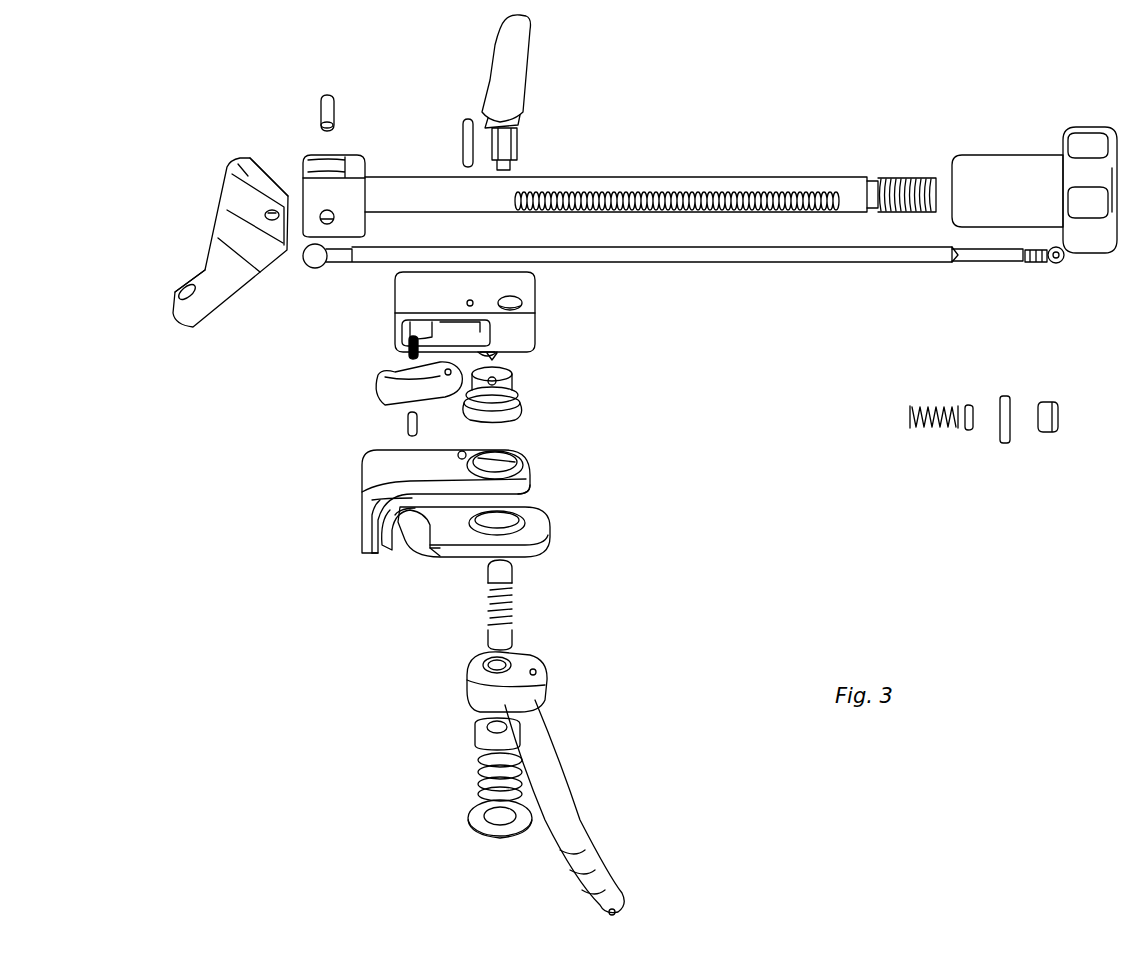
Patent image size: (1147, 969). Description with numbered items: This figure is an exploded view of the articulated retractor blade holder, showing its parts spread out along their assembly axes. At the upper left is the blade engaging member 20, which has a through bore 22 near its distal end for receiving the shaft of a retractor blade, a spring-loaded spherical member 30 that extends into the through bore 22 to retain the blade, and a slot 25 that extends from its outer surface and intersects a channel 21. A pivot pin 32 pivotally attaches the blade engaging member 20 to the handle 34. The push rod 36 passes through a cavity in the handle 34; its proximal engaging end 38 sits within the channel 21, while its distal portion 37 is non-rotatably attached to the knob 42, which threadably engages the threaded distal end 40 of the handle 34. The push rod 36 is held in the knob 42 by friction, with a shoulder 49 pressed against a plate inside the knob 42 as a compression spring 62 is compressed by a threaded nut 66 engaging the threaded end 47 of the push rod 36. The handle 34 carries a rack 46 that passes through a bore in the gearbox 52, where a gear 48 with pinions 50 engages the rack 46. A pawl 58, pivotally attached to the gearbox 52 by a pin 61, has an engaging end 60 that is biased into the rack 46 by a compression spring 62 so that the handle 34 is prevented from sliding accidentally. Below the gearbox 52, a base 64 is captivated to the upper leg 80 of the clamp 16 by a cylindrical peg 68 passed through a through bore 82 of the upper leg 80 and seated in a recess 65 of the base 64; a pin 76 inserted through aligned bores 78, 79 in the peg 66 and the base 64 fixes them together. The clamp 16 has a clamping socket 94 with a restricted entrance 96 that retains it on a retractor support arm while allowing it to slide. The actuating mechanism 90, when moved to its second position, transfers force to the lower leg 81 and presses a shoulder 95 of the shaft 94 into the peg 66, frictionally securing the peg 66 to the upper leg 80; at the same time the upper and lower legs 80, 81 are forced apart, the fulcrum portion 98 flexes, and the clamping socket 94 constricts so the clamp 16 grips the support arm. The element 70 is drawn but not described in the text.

The clamp 16 is at (308, 473).
The blade engaging member 20 is at (236, 322).
The channel 21 is at (255, 165).
The through bore 22 is at (183, 292).
The slot 25 is at (272, 182).
The spring-loaded spherical member 30 is at (190, 285).
The pivot pin 32 is at (322, 108).
The handle 34 is at (412, 177).
The push rod 36 is at (735, 263).
The distal portion 37 is at (980, 262).
The proximal engaging end 38 is at (316, 264).
The threaded distal end 40 is at (905, 178).
The knob 42 is at (1010, 167).
The rack 46 is at (785, 195).
The threaded end 47 is at (1035, 263).
The gear 48 is at (548, 55).
The shoulder 49 is at (958, 263).
The pinions 50 is at (512, 140).
The gearbox 52 is at (403, 281).
The pawl 58 is at (390, 405).
The engaging end 60 is at (440, 370).
The pin 61 is at (465, 120).
The compression spring 62 is at (405, 340).
The base 64 is at (505, 352).
The recess 65 is at (480, 412).
The peg 66 is at (1046, 432).
The cylindrical peg 68 is at (503, 432).
The ring 70 is at (468, 400).
The pin 76 is at (405, 426).
The bore 78 is at (514, 383).
The bore 79 is at (500, 362).
The upper leg 80 is at (528, 470).
The lower leg 81 is at (505, 550).
The through bore 82 is at (497, 460).
The actuating mechanism 90 is at (428, 675).
The clamping socket 94 is at (398, 587).
The shoulder 95 is at (488, 585).
The restricted entrance 96 is at (460, 568).
The fulcrum portion 98 is at (372, 505).